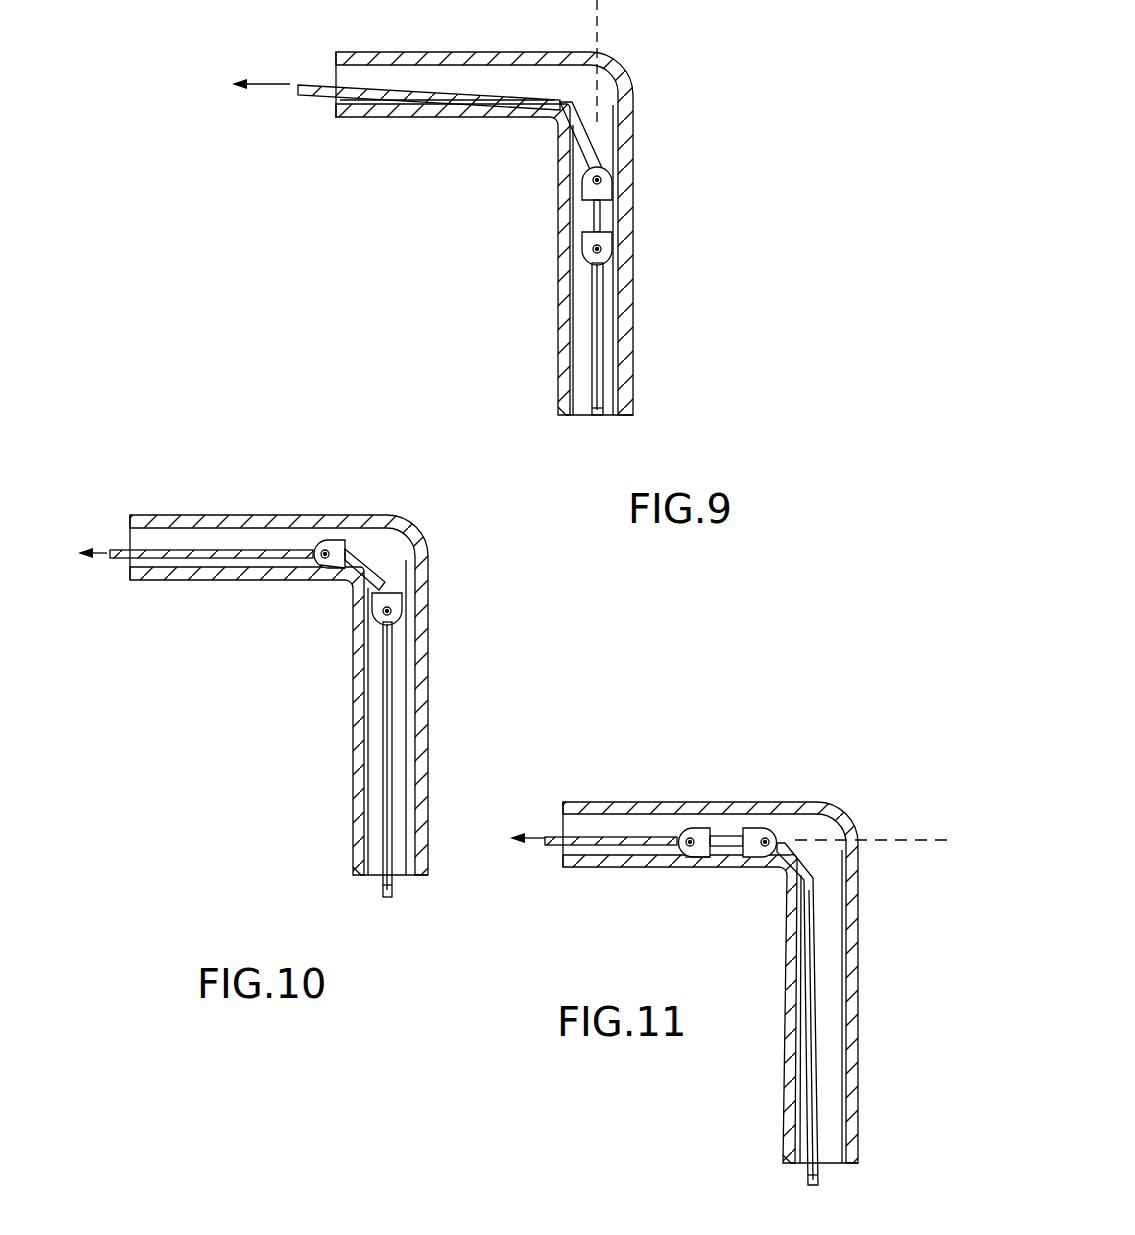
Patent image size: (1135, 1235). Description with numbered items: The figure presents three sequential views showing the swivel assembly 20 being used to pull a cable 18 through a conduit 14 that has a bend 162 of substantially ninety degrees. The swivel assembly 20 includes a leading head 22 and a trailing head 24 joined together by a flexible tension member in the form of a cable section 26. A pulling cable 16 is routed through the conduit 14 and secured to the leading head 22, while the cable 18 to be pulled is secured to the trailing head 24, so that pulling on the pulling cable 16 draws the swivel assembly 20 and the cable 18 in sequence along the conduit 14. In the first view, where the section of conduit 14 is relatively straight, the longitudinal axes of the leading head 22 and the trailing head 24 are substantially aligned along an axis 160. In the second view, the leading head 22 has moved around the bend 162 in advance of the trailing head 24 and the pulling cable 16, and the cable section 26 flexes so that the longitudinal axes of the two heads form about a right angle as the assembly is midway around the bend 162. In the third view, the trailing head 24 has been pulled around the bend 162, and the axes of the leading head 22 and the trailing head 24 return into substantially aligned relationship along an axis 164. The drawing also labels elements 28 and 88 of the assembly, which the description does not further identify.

In FIG. 9, the conduit 14 is at (560, 350).
In FIG. 10, the conduit 14 is at (353, 850).
In FIG. 11, the conduit 14 is at (785, 1105).
In FIG. 9, the pulling cable 16 is at (305, 98).
In FIG. 10, the pulling cable 16 is at (125, 550).
In FIG. 11, the pulling cable 16 is at (558, 836).
In FIG. 9, the cable to be pulled 18 is at (605, 408).
In FIG. 10, the cable to be pulled 18 is at (392, 890).
In FIG. 11, the cable to be pulled 18 is at (820, 1175).
In FIG. 9, the swivel assembly 20 is at (668, 227).
In FIG. 10, the swivel assembly 20 is at (440, 521).
In FIG. 11, the swivel assembly 20 is at (698, 790).
In FIG. 9, the leading head 22 is at (605, 178).
In FIG. 10, the leading head 22 is at (335, 540).
In FIG. 11, the leading head 22 is at (690, 830).
In FIG. 9, the trailing head 24 is at (612, 248).
In FIG. 10, the trailing head 24 is at (402, 610).
In FIG. 11, the trailing head 24 is at (770, 828).
In FIG. 9, the cable section 26 is at (598, 215).
In FIG. 10, the cable section 26 is at (365, 570).
In FIG. 11, the cable section 26 is at (727, 836).
In FIG. 9, the pivot pin 28 is at (585, 185).
In FIG. 10, the pivot pin 28 is at (340, 575).
In FIG. 11, the pivot pin 28 is at (695, 855).
In FIG. 9, the rod 88 is at (590, 275).
In FIG. 10, the rod 88 is at (380, 640).
In FIG. 11, the rod 88 is at (757, 860).
In FIG. 9, the axis 160 is at (585, 0).
In FIG. 9, the bend 162 is at (557, 122).
In FIG. 10, the bend 162 is at (353, 588).
In FIG. 11, the bend 162 is at (785, 870).
In FIG. 11, the axis 164 is at (900, 836).